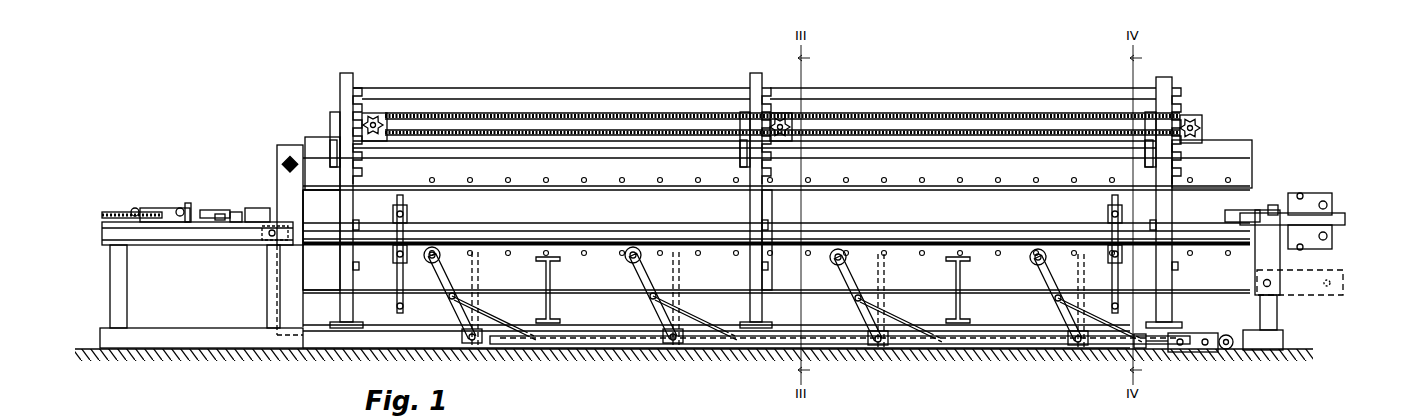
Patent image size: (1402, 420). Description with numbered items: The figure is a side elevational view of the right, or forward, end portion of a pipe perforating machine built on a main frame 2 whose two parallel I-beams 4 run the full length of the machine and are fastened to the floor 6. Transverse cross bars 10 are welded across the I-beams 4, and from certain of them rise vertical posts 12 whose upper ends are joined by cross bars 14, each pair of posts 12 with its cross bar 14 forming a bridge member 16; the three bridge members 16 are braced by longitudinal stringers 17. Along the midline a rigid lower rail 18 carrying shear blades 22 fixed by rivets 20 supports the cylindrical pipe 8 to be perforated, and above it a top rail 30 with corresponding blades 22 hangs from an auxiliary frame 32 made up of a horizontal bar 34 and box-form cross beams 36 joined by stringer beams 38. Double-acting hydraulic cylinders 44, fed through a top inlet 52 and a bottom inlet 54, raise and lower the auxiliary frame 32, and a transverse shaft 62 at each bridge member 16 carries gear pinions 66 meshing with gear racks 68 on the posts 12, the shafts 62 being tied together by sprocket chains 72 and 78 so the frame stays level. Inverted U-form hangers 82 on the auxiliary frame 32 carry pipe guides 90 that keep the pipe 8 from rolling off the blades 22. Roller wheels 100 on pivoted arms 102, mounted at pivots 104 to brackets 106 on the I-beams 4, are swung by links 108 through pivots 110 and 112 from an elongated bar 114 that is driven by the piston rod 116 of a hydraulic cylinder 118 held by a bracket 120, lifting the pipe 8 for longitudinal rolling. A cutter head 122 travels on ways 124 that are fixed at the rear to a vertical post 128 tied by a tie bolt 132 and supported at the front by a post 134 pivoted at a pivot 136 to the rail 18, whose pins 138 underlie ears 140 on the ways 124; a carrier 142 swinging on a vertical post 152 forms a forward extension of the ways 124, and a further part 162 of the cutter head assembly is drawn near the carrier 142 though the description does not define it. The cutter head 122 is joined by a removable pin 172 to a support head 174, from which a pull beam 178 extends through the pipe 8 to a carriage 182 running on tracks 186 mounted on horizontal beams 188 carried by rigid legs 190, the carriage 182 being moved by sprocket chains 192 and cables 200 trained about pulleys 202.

The main frame 2 is at (342, 74).
The I-beams 4 is at (298, 350).
The floor 6 is at (80, 349).
The cylindrical pipe 8 is at (641, 186).
The cross bars 10 is at (340, 322).
The vertical post 12 is at (340, 201).
The cross bar 14 is at (358, 74).
The bridge member 16 is at (334, 94).
The horizontal stringers 17 is at (475, 88).
The lower rail 18 is at (610, 282).
The rivets 20 is at (545, 180).
The shear blades 22 is at (470, 195).
The top rail 30 is at (560, 198).
The auxiliary frame 32 is at (322, 137).
The horizontal bar 34 is at (1242, 140).
The cross beams 36 is at (330, 158).
The stringer beams 38 is at (600, 158).
The cylinder 44 is at (330, 262).
The top inlet 52 is at (358, 228).
The bottom inlet 54 is at (359, 269).
The transverse horizontal shaft 62 is at (376, 120).
The gear pinion 66 is at (378, 116).
The gear rack 68 is at (364, 92).
The sprocket chain 72 is at (994, 130).
The sprocket chain 78 is at (515, 113).
The hangers 82 is at (406, 201).
The pipe guide 90 is at (407, 214).
The roller wheels 100 is at (432, 262).
The arm 102 is at (438, 260).
The pivot 104 is at (466, 332).
The bracket 106 is at (474, 340).
The link 108 is at (522, 317).
The pivot 110 is at (452, 296).
The pivot 112 is at (518, 340).
The elongated bar 114 is at (544, 342).
The piston rod 116 is at (1154, 350).
The hydraulic cylinder 118 is at (1193, 352).
The bracket 120 is at (1232, 350).
The cutter head 122 is at (1314, 192).
The ways 124 is at (268, 222).
The vertical post 128 is at (287, 145).
The transverse tie bolt 132 is at (284, 165).
The post 134 is at (1256, 294).
The pivot 136 is at (1270, 286).
The pins 138 is at (1276, 234).
The ears 140 is at (1272, 205).
The carrier 142 is at (1338, 210).
The vertical post 152 is at (1278, 318).
The motor unit 162 is at (1328, 198).
The removable vertical pin 172 is at (1288, 204).
The support head 174 is at (1242, 208).
The pull beam 178 is at (234, 210).
The carriage 182 is at (163, 208).
The tracks 186 is at (104, 230).
The horizontal beams 188 is at (104, 234).
The rigid legs 190 is at (112, 286).
The sprocket chains 192 is at (112, 212).
The cable 200 is at (156, 246).
The pulleys 202 is at (258, 242).